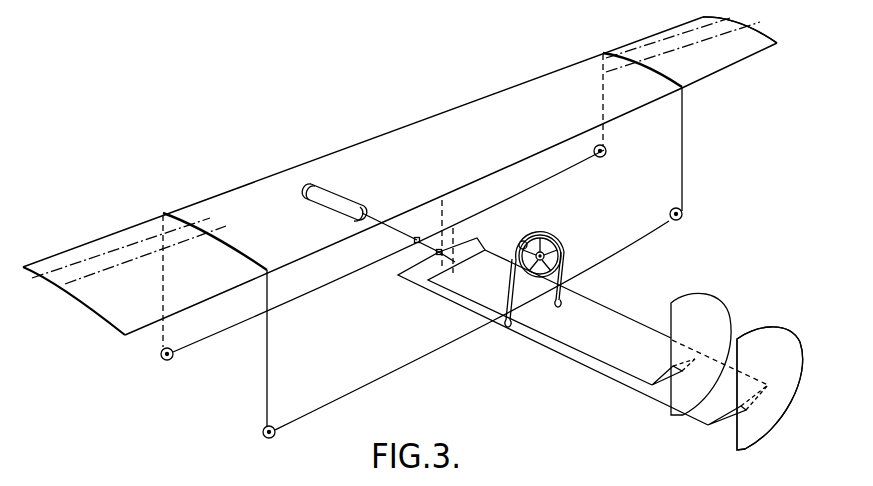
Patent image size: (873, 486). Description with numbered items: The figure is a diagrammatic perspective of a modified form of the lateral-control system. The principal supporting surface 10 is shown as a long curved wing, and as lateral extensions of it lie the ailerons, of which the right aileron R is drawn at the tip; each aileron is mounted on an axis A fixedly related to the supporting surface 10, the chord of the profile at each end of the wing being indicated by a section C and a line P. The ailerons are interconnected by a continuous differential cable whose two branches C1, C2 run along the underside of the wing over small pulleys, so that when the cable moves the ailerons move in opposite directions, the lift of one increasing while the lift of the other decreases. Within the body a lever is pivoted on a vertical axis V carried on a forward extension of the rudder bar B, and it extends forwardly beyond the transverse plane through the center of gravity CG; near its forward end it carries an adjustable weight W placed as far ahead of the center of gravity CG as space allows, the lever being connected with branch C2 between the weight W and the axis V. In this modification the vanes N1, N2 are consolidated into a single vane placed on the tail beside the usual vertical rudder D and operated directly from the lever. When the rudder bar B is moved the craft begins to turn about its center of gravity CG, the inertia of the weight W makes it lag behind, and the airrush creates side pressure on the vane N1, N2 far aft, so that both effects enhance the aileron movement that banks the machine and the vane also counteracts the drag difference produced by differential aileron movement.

The principal supporting surface 10 is at (485, 95).
The aileron axis A is at (381, 149).
The pivot line P is at (419, 144).
The rib section C is at (362, 178).
The cable branch C1 is at (219, 331).
The cable branch C2 is at (348, 392).
The right aileron R is at (728, 40).
The adjustable weight W is at (347, 199).
The vertical axis V is at (443, 200).
The rudder bar B is at (477, 240).
The center of gravity CG is at (398, 263).
The vertical rudder D is at (701, 354).
The vane N1 is at (770, 388).
The vane N2 is at (770, 388).